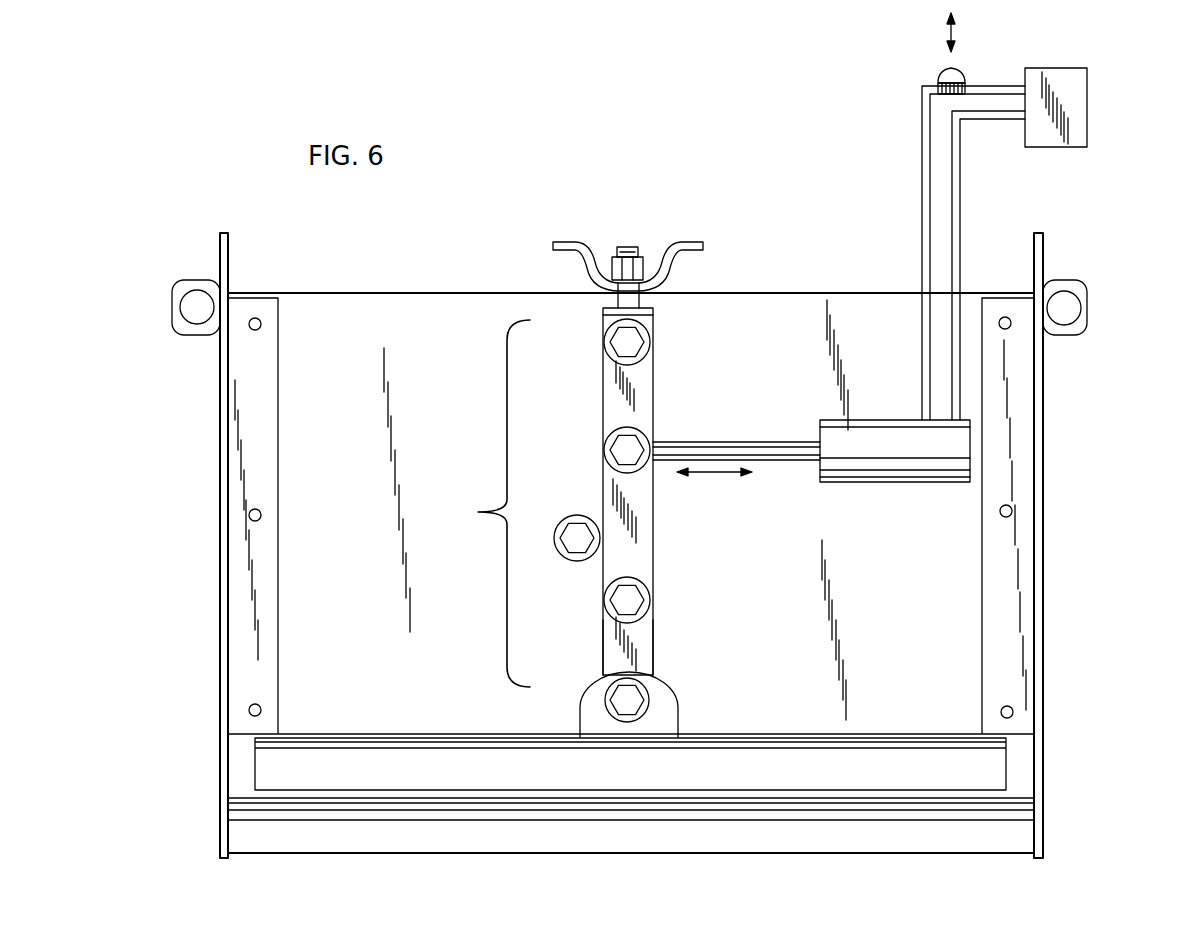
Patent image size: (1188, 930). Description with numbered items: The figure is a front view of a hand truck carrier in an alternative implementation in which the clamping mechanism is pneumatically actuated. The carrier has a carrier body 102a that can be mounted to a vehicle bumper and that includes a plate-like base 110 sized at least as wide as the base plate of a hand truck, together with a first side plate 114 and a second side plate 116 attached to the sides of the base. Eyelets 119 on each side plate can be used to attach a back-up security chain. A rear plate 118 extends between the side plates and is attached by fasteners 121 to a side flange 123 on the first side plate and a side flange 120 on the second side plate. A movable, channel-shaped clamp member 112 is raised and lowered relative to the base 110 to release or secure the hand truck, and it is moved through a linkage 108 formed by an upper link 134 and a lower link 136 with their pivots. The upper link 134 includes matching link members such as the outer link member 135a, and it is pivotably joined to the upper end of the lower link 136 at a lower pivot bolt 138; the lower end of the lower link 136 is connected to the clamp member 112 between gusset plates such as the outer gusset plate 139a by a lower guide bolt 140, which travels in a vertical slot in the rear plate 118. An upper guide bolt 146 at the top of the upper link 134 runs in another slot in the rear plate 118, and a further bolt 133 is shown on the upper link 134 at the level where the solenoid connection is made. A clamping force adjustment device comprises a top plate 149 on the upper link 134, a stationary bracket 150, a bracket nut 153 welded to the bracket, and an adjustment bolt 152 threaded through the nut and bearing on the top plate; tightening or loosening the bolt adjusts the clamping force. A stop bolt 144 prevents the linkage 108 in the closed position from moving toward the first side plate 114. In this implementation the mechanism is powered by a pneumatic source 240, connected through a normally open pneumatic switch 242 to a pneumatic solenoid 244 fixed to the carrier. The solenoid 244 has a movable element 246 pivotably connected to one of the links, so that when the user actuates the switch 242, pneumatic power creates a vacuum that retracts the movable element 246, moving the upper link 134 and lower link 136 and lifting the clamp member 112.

The carrier body 102a is at (1043, 757).
The linkage 108 is at (480, 503).
The base 110 is at (500, 853).
The clamp member 112 is at (430, 748).
The first side plate 114 is at (220, 455).
The second side plate 116 is at (1043, 445).
The rear plate 118 is at (445, 306).
The eyelets 119 is at (190, 280).
The side flange 120 is at (982, 605).
The fasteners 121 is at (261, 326).
The side flange 123 is at (265, 415).
The pivot bolt 133 is at (603, 453).
The upper link 134 is at (603, 395).
The outer link member 135a is at (655, 545).
The lower link 136 is at (655, 630).
The lower pivot bolt 138 is at (650, 604).
The outer gusset plate 139a is at (678, 725).
The lower guide bolt 140 is at (650, 705).
The stop bolt 144 is at (560, 545).
The upper guide bolt 146 is at (650, 350).
The top plate 149 is at (655, 313).
The bracket 150 is at (690, 245).
The adjustment bolt 152 is at (630, 248).
The bracket nut 153 is at (610, 262).
The pneumatic source 240 is at (1087, 95).
The pneumatic switch 242 is at (955, 65).
The pneumatic solenoid 244 is at (877, 482).
The movable element 246 is at (778, 462).